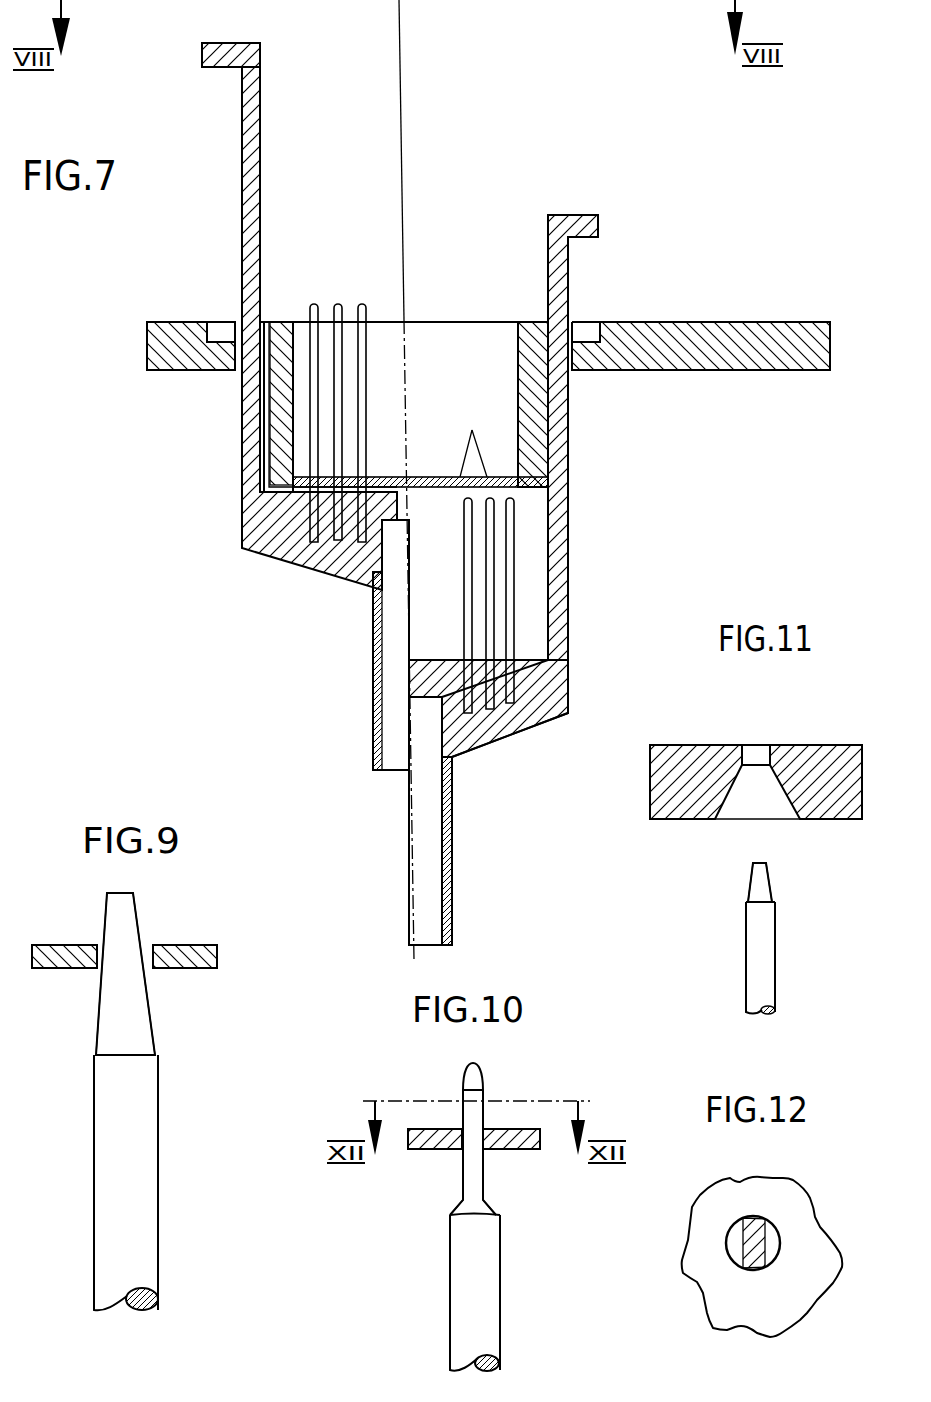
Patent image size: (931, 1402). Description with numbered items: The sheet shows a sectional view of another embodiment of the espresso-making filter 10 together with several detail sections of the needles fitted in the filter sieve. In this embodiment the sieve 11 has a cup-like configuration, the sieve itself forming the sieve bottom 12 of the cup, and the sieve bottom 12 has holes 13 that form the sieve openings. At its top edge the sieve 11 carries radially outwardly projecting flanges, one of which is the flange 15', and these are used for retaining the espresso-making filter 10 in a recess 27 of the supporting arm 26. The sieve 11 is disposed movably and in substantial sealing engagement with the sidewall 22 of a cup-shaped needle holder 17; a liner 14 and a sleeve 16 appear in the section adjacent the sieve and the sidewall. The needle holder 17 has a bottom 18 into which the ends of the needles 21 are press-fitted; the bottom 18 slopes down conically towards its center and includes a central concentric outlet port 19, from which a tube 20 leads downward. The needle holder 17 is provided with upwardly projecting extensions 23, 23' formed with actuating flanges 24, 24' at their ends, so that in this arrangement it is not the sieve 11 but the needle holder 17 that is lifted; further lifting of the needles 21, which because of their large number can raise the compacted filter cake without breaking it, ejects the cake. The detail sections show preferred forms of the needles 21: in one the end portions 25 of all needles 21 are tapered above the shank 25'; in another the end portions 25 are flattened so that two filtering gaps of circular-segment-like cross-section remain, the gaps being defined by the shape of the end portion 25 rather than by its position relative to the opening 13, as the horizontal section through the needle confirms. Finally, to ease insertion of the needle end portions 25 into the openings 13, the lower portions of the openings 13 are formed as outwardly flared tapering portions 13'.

In FIG. 7, the espresso-making filter 10 is at (240, 580).
In FIG. 7, the sieve 11 is at (508, 445).
In FIG. 7, the sieve bottom 12 is at (442, 478).
In FIG. 9, the sieve bottom 12 is at (191, 952).
In FIG. 10, the sieve bottom 12 is at (526, 1138).
In FIG. 11, the sieve bottom 12 is at (812, 760).
In FIG. 7, the holes 13 is at (472, 439).
In FIG. 9, the holes 13 is at (135, 923).
In FIG. 10, the holes 13 is at (484, 1100).
In FIG. 11, the holes 13 is at (756, 721).
In FIG. 11, the outwardly flared tapering portions 13' is at (776, 844).
In FIG. 7, the liner 14 is at (516, 369).
In FIG. 7, the flange 15' is at (415, 297).
In FIG. 7, the sleeve 16 is at (278, 323).
In FIG. 7, the needle holder 17 is at (538, 599).
In FIG. 7, the bottom 18 is at (534, 662).
In FIG. 7, the central concentric outlet port 19 is at (426, 700).
In FIG. 7, the tube 20 is at (452, 855).
In FIG. 7, the needles 21 is at (491, 648).
In FIG. 9, the needles 21 is at (80, 1134).
In FIG. 10, the needles 21 is at (440, 1292).
In FIG. 11, the needles 21 is at (736, 950).
In FIG. 7, the sidewall 22 is at (560, 520).
In FIG. 7, the upwardly projecting extension 23 is at (592, 475).
In FIG. 7, the upwardly projecting extension 23' is at (212, 307).
In FIG. 7, the actuating flange 24 is at (574, 197).
In FIG. 7, the actuating flange 24' is at (193, 56).
In FIG. 9, the end portions 25 is at (153, 974).
In FIG. 10, the end portions 25 is at (502, 1139).
In FIG. 11, the end portions 25 is at (721, 889).
In FIG. 12, the end portions 25 is at (775, 1208).
In FIG. 9, the shank 25' is at (161, 1182).
In FIG. 10, the shank 25' is at (507, 1293).
In FIG. 11, the shank 25' is at (792, 958).
In FIG. 7, the supporting arm 26 is at (728, 327).
In FIG. 7, the recess 27 is at (203, 322).